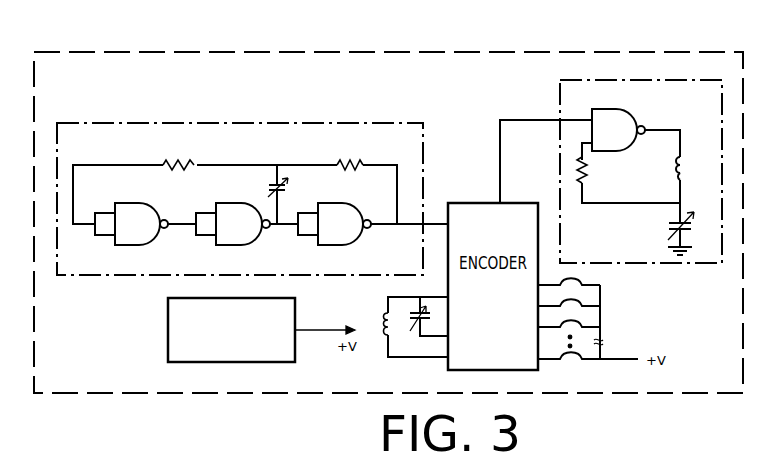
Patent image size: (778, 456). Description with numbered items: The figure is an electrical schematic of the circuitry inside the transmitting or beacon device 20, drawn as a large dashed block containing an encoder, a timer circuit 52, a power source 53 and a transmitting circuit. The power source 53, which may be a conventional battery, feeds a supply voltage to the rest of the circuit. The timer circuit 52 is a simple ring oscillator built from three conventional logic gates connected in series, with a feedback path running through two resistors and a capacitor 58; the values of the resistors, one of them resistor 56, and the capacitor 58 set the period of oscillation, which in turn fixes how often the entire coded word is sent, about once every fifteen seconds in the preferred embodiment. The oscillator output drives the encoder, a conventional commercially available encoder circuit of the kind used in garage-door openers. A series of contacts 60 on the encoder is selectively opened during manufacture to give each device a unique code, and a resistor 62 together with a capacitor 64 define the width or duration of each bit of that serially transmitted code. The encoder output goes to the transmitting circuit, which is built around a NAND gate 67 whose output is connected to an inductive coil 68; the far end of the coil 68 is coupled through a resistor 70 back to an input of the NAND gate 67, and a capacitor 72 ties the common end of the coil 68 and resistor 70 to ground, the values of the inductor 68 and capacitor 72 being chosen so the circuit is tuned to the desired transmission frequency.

The transmitting or beacon device 20 is at (330, 52).
The timer circuit 52 is at (312, 123).
The power source 53 is at (168, 328).
The resistor 56 is at (352, 165).
The capacitor 58 is at (283, 190).
The series of contacts 60 is at (600, 316).
The resistor 62 is at (386, 318).
The capacitor 64 is at (416, 320).
The NAND gate 67 is at (627, 109).
The inductive coil 68 is at (686, 157).
The resistor 70 is at (586, 172).
The capacitor 72 is at (672, 228).